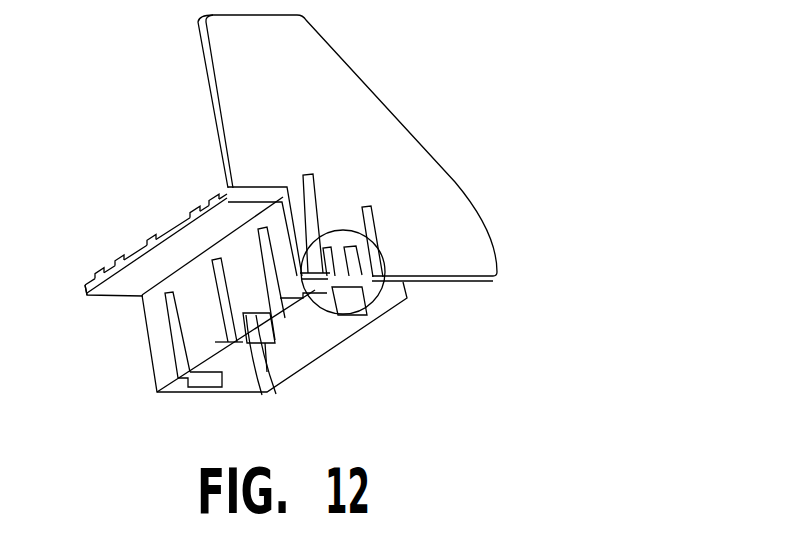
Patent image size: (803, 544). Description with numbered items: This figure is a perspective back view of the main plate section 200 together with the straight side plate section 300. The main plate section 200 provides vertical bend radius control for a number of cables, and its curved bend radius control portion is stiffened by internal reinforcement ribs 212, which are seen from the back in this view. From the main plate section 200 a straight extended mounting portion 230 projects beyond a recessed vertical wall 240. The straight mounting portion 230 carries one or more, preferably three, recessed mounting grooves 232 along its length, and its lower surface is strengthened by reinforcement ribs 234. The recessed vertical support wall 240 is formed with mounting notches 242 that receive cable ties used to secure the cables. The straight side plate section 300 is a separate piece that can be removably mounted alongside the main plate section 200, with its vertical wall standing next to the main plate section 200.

The straight side plate section 300 is at (366, 118).
The main plate section 200 is at (265, 294).
The recessed vertical wall 240 is at (158, 335).
The mounting notches 242 is at (158, 390).
The straight extended mounting portion 230 is at (130, 263).
The recessed mounting grooves 232 is at (153, 241).
The reinforcement ribs 234 is at (127, 297).
The internal reinforcement ribs 212 is at (323, 325).